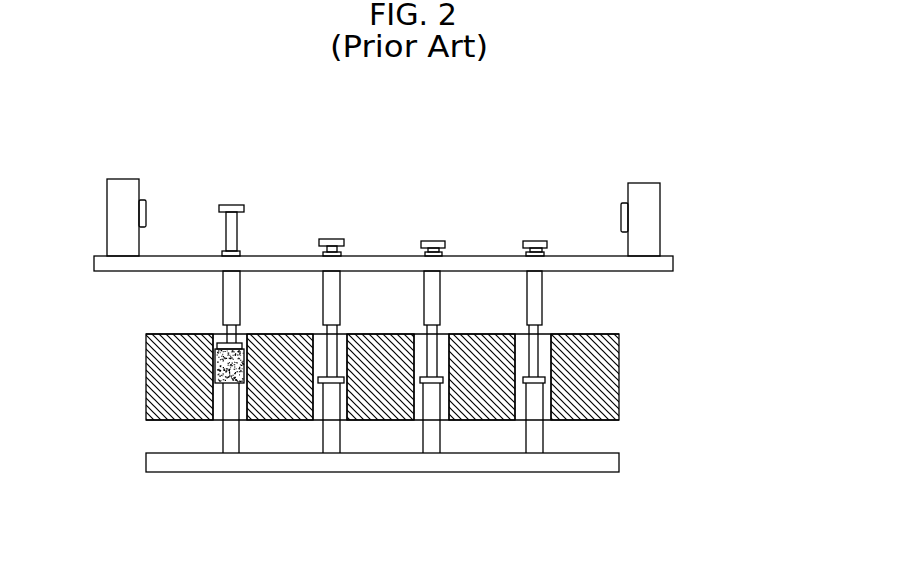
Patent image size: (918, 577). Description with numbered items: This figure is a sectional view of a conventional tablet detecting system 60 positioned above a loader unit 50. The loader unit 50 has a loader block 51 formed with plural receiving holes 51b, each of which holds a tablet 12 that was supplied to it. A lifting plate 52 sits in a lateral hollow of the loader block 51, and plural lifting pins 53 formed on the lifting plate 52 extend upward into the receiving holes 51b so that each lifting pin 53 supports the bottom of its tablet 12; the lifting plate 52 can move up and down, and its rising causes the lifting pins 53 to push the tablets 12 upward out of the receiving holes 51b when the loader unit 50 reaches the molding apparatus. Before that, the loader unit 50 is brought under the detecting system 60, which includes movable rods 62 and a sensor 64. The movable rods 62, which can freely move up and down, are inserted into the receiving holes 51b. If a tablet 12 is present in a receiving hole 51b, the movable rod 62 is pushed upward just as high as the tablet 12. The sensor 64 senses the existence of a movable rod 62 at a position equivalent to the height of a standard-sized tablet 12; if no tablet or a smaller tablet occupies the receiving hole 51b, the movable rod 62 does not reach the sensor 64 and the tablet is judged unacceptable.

The tablet 12 is at (213, 362).
The loader unit 50 is at (397, 403).
The loader block 51 is at (156, 353).
The receiving hole 51b is at (423, 351).
The lifting plate 52 is at (154, 462).
The lifting pin 53 is at (228, 433).
The tablet detecting system 60 is at (705, 201).
The movable rod 62 is at (237, 238).
The sensor 64 is at (146, 205).